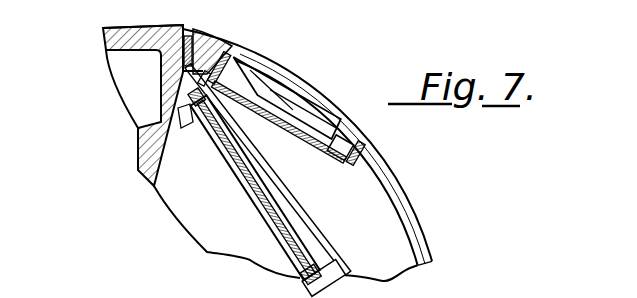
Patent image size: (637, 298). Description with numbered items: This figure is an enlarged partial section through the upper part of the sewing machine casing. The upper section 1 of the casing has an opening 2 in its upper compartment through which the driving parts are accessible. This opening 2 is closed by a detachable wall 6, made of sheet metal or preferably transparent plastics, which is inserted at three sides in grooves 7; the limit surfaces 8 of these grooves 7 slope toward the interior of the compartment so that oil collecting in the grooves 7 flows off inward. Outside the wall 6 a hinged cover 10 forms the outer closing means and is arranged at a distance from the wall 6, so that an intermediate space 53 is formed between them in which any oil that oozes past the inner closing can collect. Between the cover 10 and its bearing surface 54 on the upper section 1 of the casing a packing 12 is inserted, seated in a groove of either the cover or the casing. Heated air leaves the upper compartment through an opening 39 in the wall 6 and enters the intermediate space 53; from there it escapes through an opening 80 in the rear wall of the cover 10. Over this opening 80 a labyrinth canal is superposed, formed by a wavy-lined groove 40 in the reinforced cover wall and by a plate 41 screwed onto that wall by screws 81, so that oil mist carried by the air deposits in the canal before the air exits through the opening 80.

The upper section of the casing 1 is at (117, 60).
The opening 2 is at (310, 250).
The detachable wall 6 is at (245, 150).
The grooves 7 is at (205, 102).
The limit surfaces 8 is at (188, 122).
The cover 10 is at (416, 247).
The packing 12 is at (190, 60).
The opening 39 is at (200, 134).
The wavy-lined groove 40 is at (290, 115).
The plate 41 is at (278, 120).
The intermediate space 53 is at (330, 212).
The bearing surface 54 is at (178, 46).
The opening 80 is at (250, 60).
The screws 81 is at (230, 56).